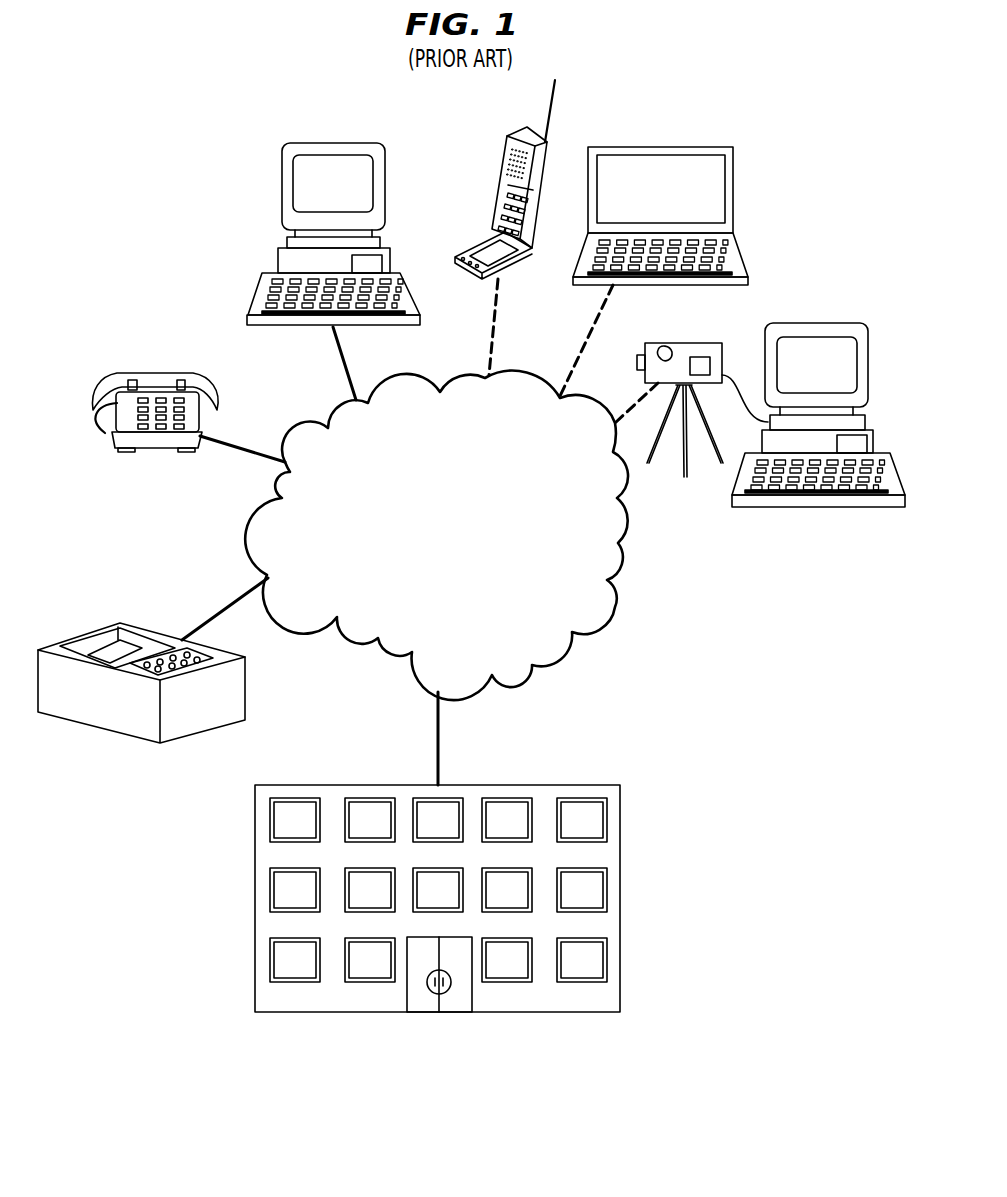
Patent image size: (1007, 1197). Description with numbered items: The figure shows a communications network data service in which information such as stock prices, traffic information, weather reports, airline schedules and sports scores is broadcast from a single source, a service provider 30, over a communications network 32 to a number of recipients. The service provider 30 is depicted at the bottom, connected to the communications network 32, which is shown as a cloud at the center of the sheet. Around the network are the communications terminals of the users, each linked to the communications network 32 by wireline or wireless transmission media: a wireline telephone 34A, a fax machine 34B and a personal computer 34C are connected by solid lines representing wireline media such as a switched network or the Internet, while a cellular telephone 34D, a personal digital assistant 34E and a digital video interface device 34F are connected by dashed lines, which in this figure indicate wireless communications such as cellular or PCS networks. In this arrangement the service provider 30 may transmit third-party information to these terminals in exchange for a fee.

The service provider 30 is at (568, 785).
The communications network 32 is at (613, 607).
The wireline telephone 34A is at (112, 382).
The fax machine 34B is at (72, 640).
The personal computer 34C is at (282, 188).
The cellular telephone 34D is at (508, 167).
The personal digital assistant (PDA) 34E is at (733, 203).
The digital video interface device 34F is at (810, 323).